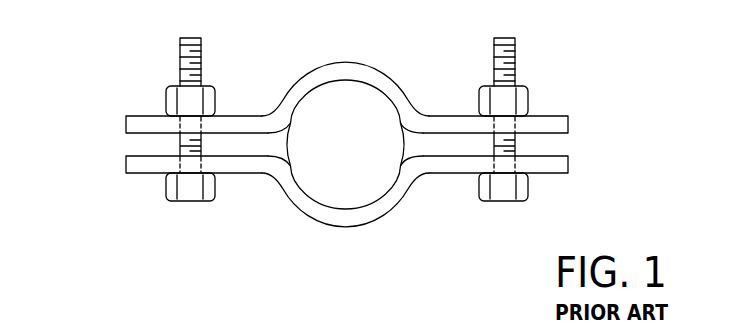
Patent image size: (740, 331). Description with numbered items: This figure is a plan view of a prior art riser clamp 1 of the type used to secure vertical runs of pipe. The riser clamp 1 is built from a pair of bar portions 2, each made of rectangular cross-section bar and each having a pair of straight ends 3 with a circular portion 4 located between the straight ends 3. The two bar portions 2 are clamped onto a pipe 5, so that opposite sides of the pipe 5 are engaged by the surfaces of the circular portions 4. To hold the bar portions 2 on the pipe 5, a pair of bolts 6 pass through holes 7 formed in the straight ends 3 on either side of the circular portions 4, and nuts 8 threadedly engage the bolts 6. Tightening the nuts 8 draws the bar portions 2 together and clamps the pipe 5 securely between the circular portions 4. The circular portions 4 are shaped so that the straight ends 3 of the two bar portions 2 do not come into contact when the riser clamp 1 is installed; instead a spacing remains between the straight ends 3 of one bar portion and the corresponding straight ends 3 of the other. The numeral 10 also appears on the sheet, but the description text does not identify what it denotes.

The riser clamp 1 is at (106, 52).
The bar portions 2 is at (118, 112).
The straight ends 3 is at (143, 123).
The circular portion 4 is at (348, 70).
The pipe 5 is at (363, 115).
The bolts 6 is at (190, 201).
The holes 7 is at (204, 125).
The nuts 8 is at (210, 89).
The sheet reference 10 is at (148, 330).